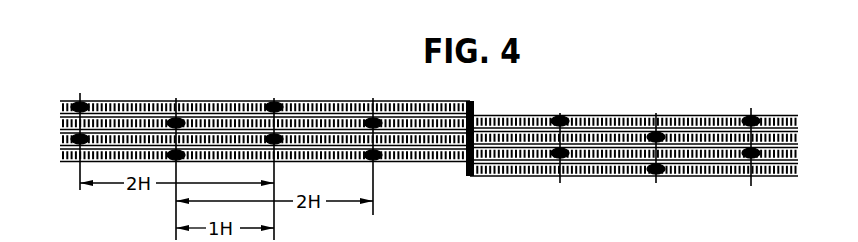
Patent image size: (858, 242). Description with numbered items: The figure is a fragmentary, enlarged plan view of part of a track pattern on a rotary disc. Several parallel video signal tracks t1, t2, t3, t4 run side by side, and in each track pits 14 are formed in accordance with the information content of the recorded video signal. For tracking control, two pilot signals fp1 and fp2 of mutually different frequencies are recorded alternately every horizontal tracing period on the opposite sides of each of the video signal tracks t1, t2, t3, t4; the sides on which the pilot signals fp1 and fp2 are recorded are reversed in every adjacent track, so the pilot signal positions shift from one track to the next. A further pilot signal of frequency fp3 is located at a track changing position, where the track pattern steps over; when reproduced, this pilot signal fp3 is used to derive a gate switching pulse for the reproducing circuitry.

The pits 14 is at (452, 150).
The video signal track t1 is at (463, 104).
The video signal track t2 is at (800, 129).
The video signal track t3 is at (800, 147).
The video signal track t4 is at (801, 165).
The pilot signal fp1 is at (268, 97).
The pilot signal fp2 is at (368, 99).
The pilot signal fp3 is at (468, 108).